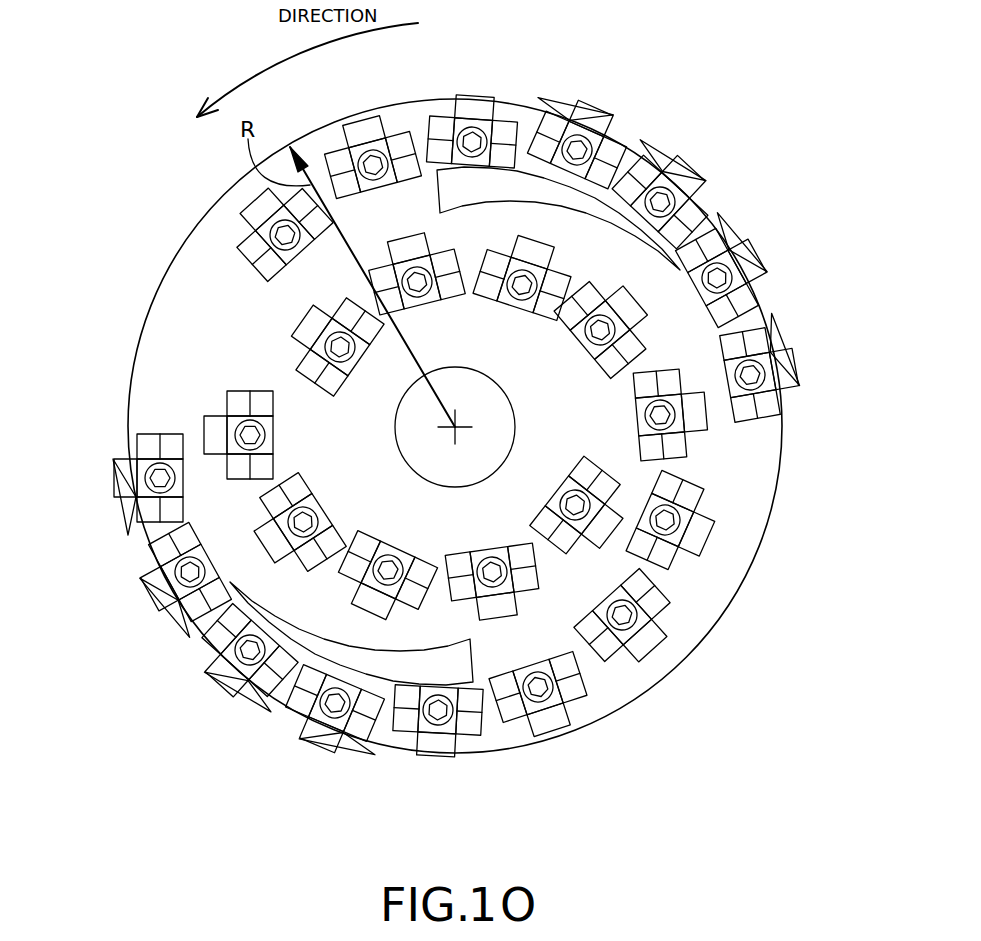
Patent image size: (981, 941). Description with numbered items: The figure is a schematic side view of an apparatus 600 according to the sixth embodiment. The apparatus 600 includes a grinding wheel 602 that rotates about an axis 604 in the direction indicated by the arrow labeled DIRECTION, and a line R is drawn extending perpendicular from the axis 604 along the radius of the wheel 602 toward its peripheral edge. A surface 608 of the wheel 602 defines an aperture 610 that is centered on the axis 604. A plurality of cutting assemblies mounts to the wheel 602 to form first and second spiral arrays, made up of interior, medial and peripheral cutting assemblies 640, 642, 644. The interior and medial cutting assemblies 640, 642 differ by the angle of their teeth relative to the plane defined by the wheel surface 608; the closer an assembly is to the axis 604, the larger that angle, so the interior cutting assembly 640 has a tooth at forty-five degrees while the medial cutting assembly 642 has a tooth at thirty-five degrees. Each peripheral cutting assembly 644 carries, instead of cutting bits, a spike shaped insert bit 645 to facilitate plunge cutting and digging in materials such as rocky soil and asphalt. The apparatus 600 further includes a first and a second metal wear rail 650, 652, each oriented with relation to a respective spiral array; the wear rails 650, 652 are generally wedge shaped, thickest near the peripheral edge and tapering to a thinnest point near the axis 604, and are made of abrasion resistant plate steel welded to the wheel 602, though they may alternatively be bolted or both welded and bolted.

The apparatus 600 is at (710, 705).
The grinding wheel 602 is at (708, 638).
The axis 604 is at (457, 427).
The surface 608 is at (403, 517).
The aperture 610 is at (497, 383).
The interior cutting assembly 640 is at (422, 303).
The medial cutting assembly 642 is at (555, 735).
The peripheral cutting assembly 644 is at (598, 107).
The spike shaped insert bit 645 is at (556, 98).
The first metal wear rail 650 is at (527, 178).
The second metal wear rail 652 is at (376, 673).